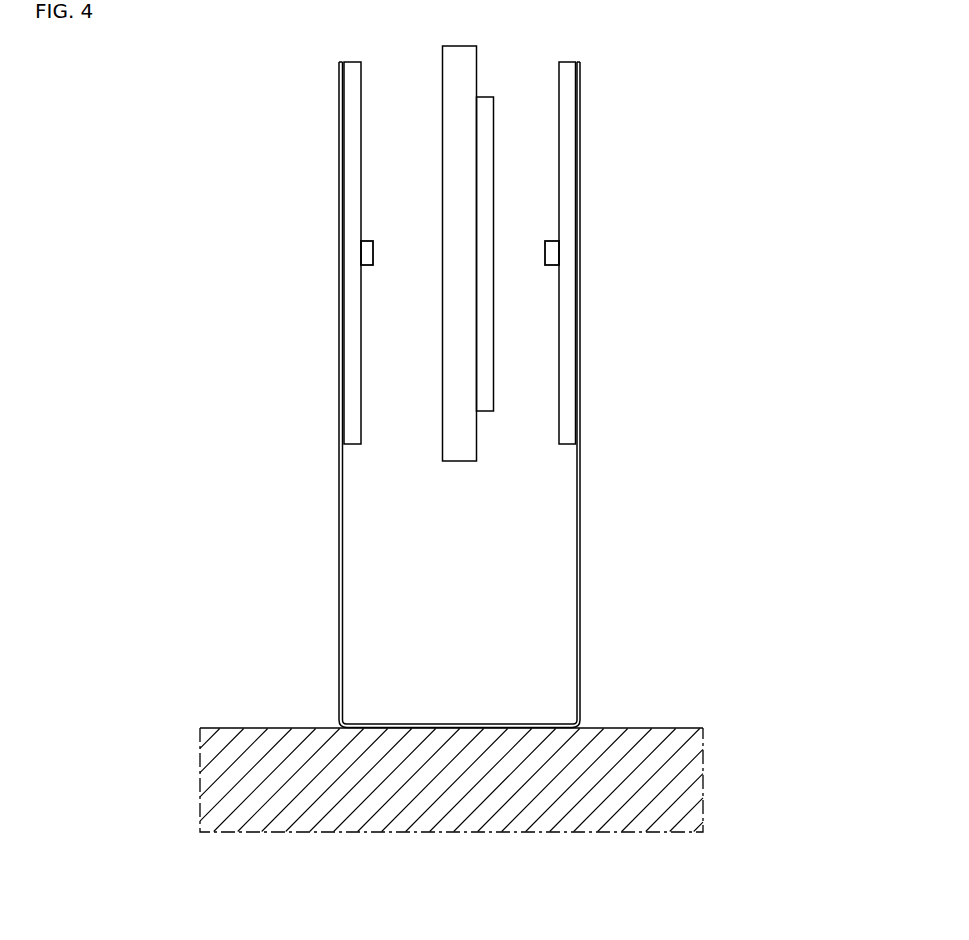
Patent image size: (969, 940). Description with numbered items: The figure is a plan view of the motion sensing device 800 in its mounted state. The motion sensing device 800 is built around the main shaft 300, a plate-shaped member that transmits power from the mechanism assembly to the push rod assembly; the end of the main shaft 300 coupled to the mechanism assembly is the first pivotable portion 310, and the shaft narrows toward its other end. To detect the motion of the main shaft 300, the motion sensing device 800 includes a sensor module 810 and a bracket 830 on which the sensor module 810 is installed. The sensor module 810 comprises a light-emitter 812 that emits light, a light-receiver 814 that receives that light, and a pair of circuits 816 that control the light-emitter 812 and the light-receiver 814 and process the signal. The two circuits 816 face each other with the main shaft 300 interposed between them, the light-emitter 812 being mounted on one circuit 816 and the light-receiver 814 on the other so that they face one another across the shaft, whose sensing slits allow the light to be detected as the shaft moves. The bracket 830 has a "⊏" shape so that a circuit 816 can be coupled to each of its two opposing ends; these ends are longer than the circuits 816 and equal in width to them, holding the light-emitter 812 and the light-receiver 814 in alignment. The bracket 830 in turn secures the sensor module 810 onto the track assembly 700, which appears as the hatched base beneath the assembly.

The main shaft 300 is at (458, 372).
The first pivotable portion 310 is at (493, 292).
The track assembly 700 is at (632, 728).
The motion sensing device 800 is at (744, 221).
The sensor module 810 is at (684, 162).
The light-emitter 812 is at (373, 252).
The light-receiver 814 is at (557, 252).
The circuit 816 is at (568, 302).
The bracket 830 is at (582, 350).